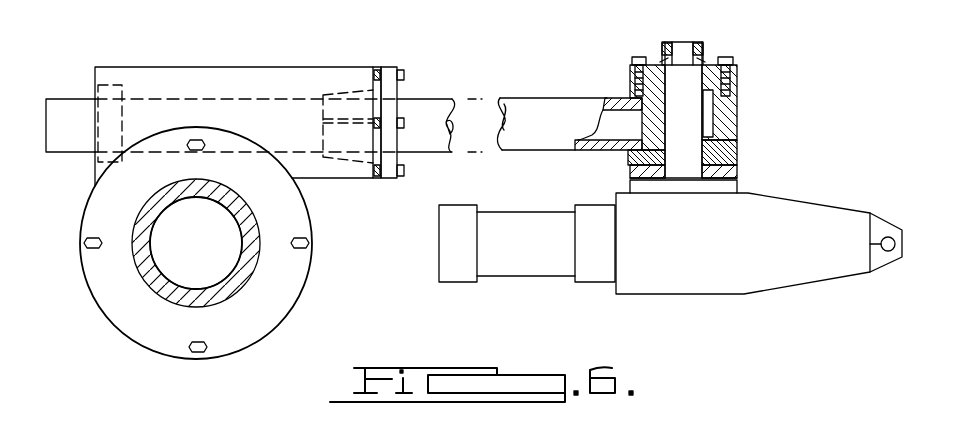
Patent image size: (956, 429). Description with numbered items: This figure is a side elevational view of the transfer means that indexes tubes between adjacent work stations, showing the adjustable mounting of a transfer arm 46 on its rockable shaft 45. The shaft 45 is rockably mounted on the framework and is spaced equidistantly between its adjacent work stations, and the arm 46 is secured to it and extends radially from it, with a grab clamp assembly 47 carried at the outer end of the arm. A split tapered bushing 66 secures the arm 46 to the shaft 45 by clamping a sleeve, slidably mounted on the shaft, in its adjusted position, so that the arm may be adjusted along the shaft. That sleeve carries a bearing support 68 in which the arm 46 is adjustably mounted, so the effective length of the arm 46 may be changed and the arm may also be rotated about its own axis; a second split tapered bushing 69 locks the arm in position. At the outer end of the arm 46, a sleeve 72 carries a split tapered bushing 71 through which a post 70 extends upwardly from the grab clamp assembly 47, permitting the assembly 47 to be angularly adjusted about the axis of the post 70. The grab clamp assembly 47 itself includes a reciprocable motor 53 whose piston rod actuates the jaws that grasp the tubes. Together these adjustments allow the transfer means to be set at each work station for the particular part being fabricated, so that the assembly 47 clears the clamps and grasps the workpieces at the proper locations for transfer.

The shaft 45 is at (258, 243).
The transfer arm 46 is at (532, 110).
The grab clamp assembly 47 is at (753, 299).
The reciprocable motor 53 is at (523, 258).
The split tapered bushing 66 is at (308, 282).
The bearing support 68 is at (251, 80).
The split tapered bushing 69 is at (391, 66).
The post 70 is at (692, 85).
The split tapered bushing 71 is at (708, 115).
The sleeve 72 is at (730, 133).